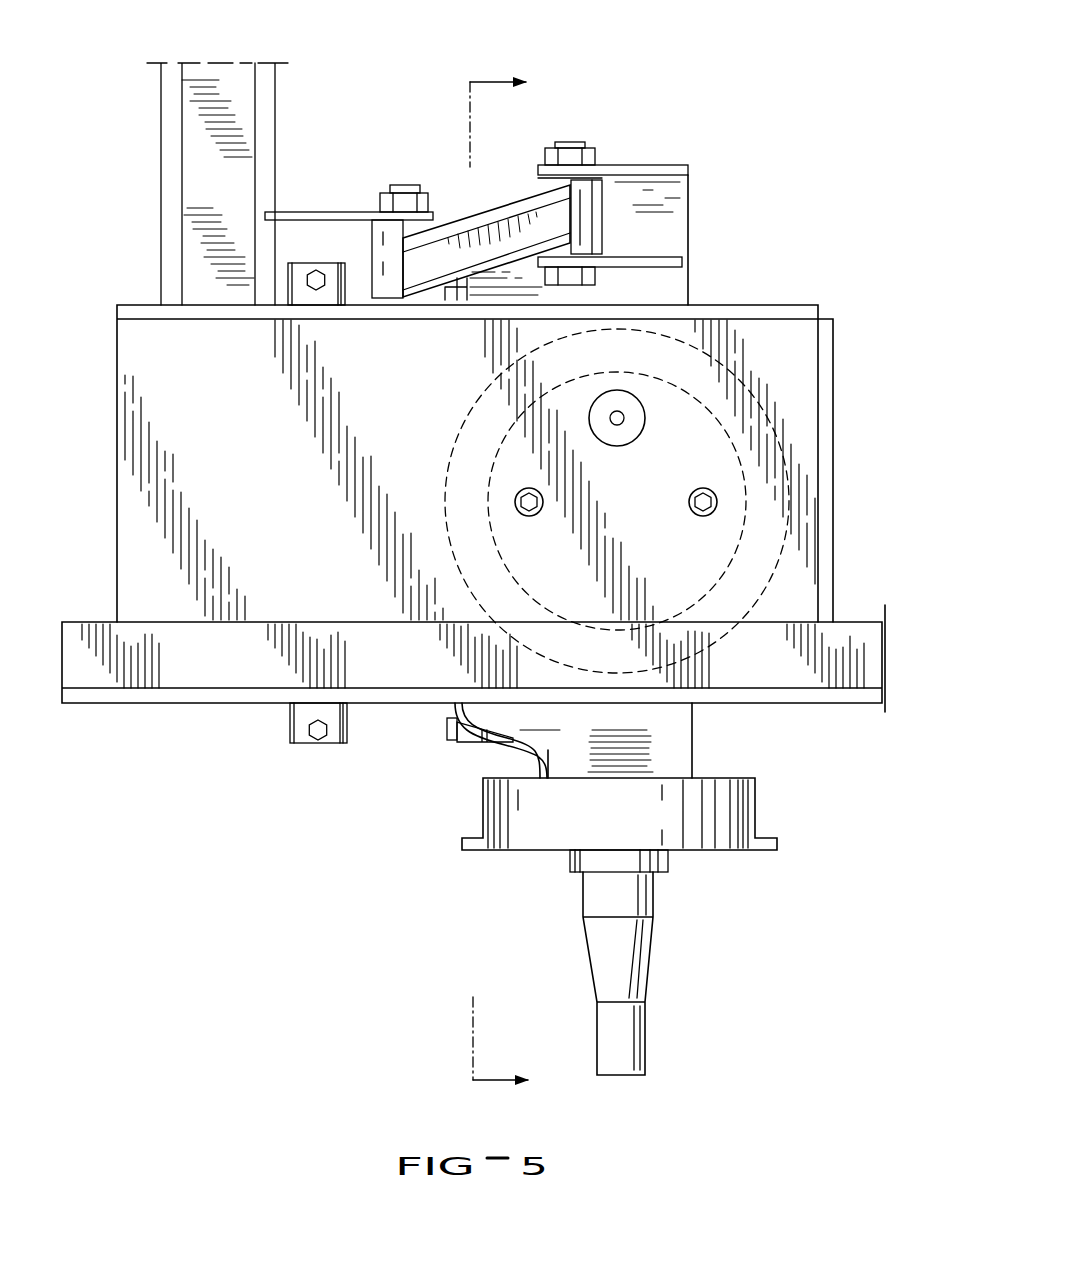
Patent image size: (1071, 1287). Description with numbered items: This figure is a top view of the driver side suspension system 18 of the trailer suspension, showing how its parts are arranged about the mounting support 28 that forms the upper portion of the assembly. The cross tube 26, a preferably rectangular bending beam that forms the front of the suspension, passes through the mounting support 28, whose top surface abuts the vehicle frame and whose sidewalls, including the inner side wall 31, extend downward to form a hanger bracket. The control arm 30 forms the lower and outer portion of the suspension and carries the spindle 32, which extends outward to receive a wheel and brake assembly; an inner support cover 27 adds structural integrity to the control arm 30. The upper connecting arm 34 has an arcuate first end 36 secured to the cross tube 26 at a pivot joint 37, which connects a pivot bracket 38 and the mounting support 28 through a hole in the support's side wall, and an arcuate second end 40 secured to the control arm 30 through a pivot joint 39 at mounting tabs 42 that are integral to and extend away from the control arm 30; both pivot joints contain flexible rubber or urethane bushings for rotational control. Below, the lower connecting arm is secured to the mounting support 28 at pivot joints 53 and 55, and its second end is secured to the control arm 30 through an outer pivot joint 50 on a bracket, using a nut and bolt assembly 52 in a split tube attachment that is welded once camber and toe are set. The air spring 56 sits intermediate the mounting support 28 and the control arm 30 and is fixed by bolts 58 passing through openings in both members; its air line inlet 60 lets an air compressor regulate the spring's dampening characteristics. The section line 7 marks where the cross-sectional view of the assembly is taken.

The section line 7- 7 is at (509, 582).
The driver side suspension system 18 is at (683, 80).
The cross tube 26 is at (198, 136).
The inner support cover 27 is at (660, 728).
The mounting support 28 is at (163, 372).
The control arm 30 is at (690, 218).
The inner side wall 31 is at (207, 303).
The spindle 32 is at (657, 893).
The upper connecting arm 34 is at (508, 198).
The first end 36 is at (372, 245).
The pivot joint 37 is at (404, 186).
The pivot bracket 38 is at (297, 212).
The pivot joint 39 is at (572, 143).
The second end 40 is at (605, 214).
The mounting tabs 42 is at (656, 165).
The outer pivot joint 50 is at (484, 749).
The nut and bolt assembly 52 is at (302, 262).
The pivot joint 53 is at (332, 748).
The pivot joint 55 is at (322, 262).
The air spring 56 is at (470, 392).
The bolts 58 is at (529, 516).
The air line inlet 60 is at (619, 423).